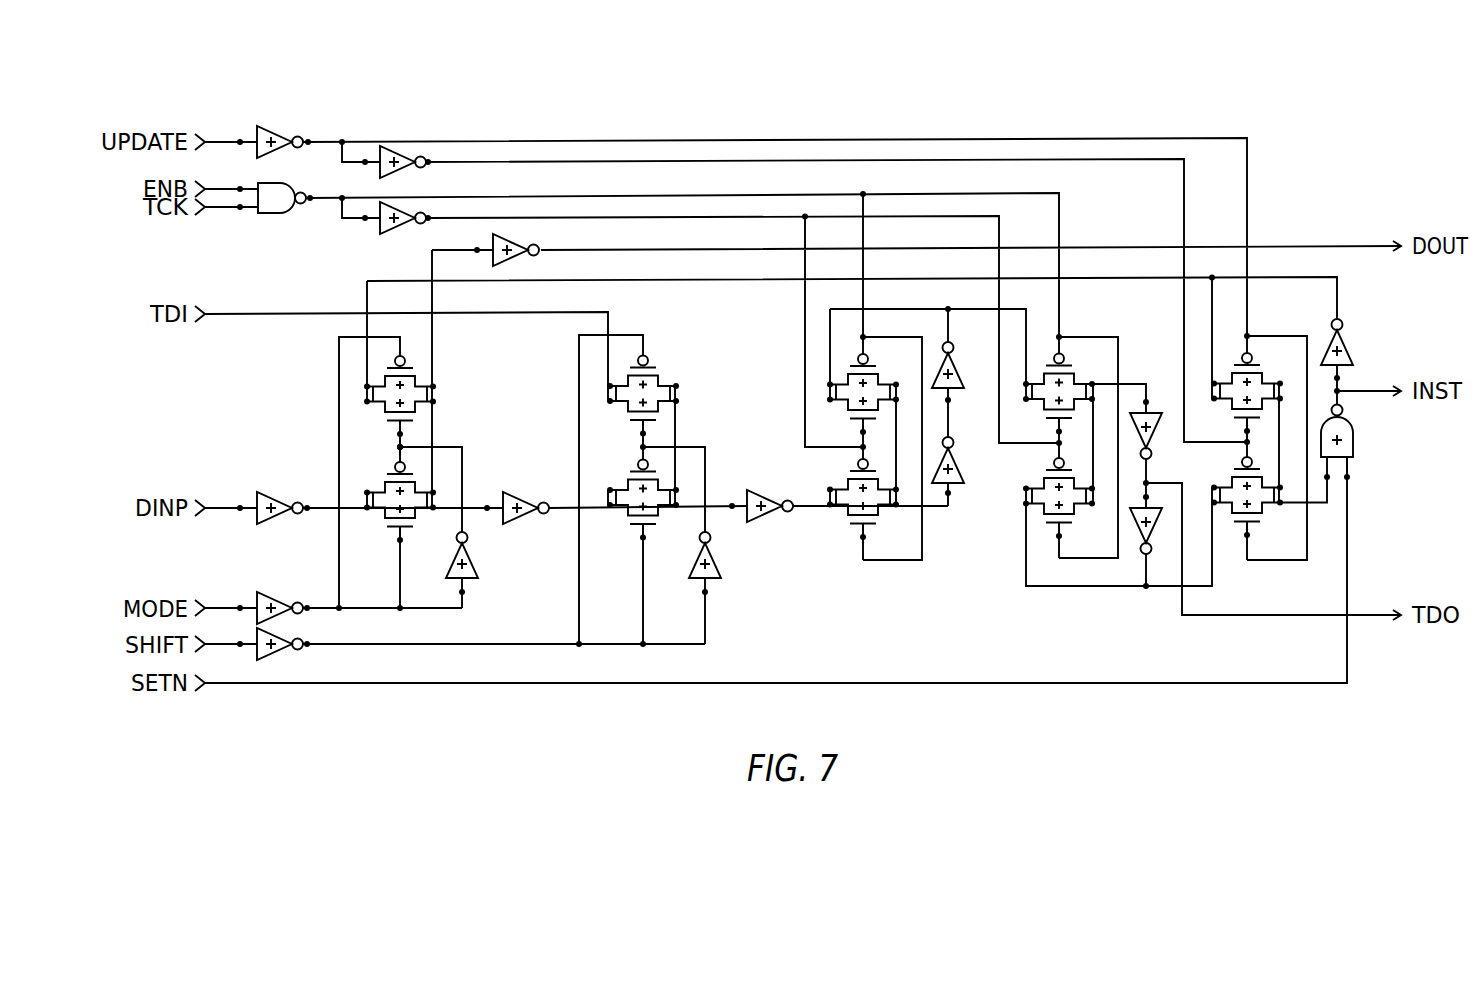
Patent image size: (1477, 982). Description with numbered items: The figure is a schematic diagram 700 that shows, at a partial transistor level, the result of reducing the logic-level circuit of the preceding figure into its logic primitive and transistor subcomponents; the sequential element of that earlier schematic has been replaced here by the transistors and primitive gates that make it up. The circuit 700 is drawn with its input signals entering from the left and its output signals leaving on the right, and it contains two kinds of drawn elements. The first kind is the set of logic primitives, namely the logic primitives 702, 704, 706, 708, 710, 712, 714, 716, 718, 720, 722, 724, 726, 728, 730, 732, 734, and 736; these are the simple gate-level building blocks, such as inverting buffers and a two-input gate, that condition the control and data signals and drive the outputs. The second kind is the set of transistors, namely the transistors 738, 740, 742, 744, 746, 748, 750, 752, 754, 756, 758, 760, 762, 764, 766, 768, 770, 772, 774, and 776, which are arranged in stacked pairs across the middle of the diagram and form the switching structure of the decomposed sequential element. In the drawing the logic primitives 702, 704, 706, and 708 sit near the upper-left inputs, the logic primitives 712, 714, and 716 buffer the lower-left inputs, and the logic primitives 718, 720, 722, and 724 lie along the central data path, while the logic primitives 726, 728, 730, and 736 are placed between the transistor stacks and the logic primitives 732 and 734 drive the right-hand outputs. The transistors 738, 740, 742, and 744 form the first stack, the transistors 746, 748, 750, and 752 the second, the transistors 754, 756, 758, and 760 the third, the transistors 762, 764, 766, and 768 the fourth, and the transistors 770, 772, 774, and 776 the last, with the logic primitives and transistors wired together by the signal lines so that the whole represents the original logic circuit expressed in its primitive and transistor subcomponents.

The schematic diagram 700 is at (1163, 87).
The logic primitive 702 is at (278, 127).
The logic primitive 704 is at (392, 149).
The logic primitive 706 is at (277, 216).
The logic primitive 708 is at (379, 229).
The logic primitive 710 is at (512, 237).
The logic primitive 712 is at (281, 492).
The logic primitive 714 is at (283, 593).
The logic primitive 716 is at (280, 657).
The logic primitive 718 is at (478, 558).
The logic primitive 720 is at (526, 492).
The logic primitive 722 is at (722, 556).
The logic primitive 724 is at (767, 490).
The logic primitive 726 is at (960, 356).
The logic primitive 728 is at (960, 457).
The logic primitive 730 is at (1156, 405).
The logic primitive 732 is at (1355, 342).
The logic primitive 734 is at (1357, 440).
The logic primitive 736 is at (1137, 540).
The transistor 738 is at (417, 374).
The transistor 740 is at (415, 421).
The transistor 742 is at (390, 473).
The transistor 744 is at (375, 522).
The transistor 746 is at (657, 374).
The transistor 748 is at (657, 417).
The transistor 750 is at (627, 474).
The transistor 752 is at (622, 520).
The transistor 754 is at (843, 369).
The transistor 756 is at (843, 416).
The transistor 758 is at (847, 473).
The transistor 760 is at (845, 518).
The transistor 762 is at (1077, 368).
The transistor 764 is at (1075, 414).
The transistor 766 is at (1043, 472).
The transistor 768 is at (1047, 527).
The transistor 770 is at (1263, 367).
The transistor 772 is at (1262, 413).
The transistor 774 is at (1233, 470).
The transistor 776 is at (1263, 517).